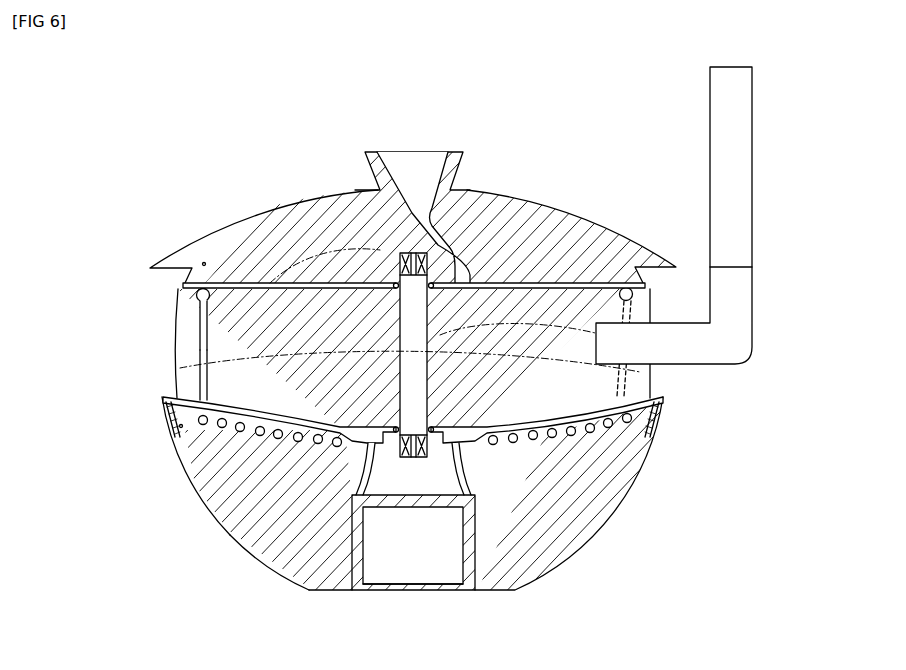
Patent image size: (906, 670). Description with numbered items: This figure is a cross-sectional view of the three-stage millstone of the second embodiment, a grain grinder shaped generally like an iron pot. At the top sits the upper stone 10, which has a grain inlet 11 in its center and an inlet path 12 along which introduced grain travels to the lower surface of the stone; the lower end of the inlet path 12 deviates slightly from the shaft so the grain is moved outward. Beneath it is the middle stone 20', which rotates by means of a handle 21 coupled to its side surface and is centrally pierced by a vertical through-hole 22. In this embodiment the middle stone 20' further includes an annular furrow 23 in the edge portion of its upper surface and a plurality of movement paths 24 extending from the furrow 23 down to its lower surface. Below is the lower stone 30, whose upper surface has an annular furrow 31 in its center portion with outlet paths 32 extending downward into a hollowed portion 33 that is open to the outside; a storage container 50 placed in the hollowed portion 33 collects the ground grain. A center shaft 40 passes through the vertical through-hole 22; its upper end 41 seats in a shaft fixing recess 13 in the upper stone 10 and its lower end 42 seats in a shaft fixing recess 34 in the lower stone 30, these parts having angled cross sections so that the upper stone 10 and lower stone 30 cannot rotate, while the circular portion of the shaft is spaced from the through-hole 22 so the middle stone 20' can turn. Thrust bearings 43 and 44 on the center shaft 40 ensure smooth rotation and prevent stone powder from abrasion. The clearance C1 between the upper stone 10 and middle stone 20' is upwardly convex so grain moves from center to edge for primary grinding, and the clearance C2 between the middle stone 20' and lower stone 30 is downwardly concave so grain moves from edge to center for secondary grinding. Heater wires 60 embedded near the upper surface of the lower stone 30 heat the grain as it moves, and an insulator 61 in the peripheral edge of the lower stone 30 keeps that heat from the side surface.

The upper stone 10 is at (228, 204).
The grain inlet 11 is at (421, 156).
The inlet path 12 is at (522, 230).
The shaft fixing recess 13 is at (385, 240).
The upper end 41 is at (470, 215).
The middle stone 20' is at (453, 330).
The handle 21 is at (742, 146).
The vertical through-hole 22 is at (439, 357).
The annular furrow 23 is at (630, 280).
The movement paths 24 is at (615, 378).
The thrust bearing 43 is at (194, 298).
The thrust bearing 44 is at (208, 379).
The lower stone 30 is at (562, 532).
The annular furrow 31 is at (240, 535).
The outlet paths 32 is at (258, 563).
The hollowed portion 33 is at (309, 593).
The shaft fixing recess 34 is at (416, 460).
The center shaft 40 is at (632, 418).
The lower end 42 is at (470, 448).
The storage container 50 is at (477, 578).
The heater wires 60 is at (200, 428).
The insulator 61 is at (170, 409).
The clearance C1 is at (204, 262).
The clearance C2 is at (180, 427).